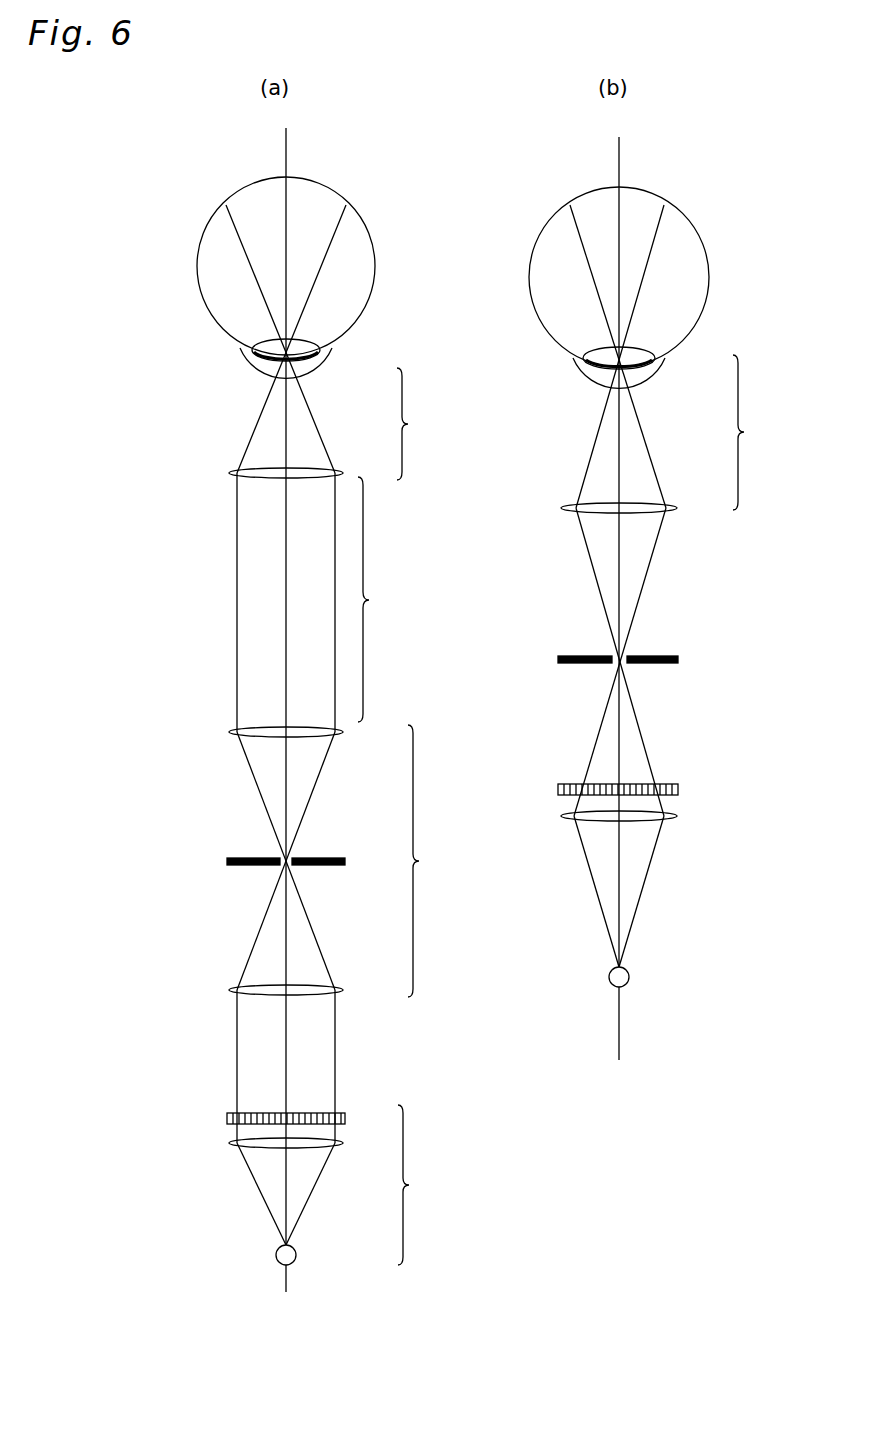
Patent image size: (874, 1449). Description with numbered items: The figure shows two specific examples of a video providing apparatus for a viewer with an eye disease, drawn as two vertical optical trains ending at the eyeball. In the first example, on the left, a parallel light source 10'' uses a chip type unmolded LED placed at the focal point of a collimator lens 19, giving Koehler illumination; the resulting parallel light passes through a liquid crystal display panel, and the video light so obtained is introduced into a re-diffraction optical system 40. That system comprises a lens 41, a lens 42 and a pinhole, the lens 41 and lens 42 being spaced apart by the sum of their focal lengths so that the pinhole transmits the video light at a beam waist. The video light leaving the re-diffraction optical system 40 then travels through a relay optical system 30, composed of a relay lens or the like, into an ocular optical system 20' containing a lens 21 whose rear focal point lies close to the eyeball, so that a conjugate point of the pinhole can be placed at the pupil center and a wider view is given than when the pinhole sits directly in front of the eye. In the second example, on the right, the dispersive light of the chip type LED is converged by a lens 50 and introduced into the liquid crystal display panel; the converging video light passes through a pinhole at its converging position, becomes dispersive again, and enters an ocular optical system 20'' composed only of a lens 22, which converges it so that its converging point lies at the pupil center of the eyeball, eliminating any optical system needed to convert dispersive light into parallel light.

The collimator lens 19 is at (343, 1143).
The lens 21 is at (343, 471).
The lens 22 is at (677, 506).
The relay optical system 30 is at (320, 602).
The re-diffraction optical system 40 is at (345, 861).
The lens 41 is at (343, 990).
The lens 42 is at (343, 733).
The lens 50 is at (677, 816).
The parallel light source 10'' is at (427, 1185).
The ocular optical system 20' is at (423, 424).
The ocular optical system 20'' is at (762, 432).